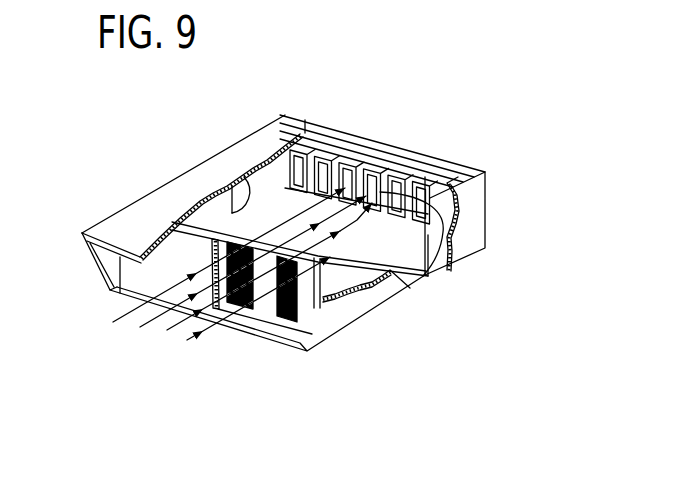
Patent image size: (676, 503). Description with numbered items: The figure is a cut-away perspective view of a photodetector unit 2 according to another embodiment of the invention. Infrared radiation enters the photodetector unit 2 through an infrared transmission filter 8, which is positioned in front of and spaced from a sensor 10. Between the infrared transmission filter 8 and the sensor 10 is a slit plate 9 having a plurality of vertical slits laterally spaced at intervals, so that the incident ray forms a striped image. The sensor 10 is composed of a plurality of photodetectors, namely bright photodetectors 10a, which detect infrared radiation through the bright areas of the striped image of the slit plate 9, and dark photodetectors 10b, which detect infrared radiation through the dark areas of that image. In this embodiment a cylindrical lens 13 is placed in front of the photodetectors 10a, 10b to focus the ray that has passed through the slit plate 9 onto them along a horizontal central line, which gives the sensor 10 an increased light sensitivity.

The photodetector unit 2 is at (495, 247).
The infrared transmission filter 8 is at (135, 268).
The slit plate 9 is at (318, 290).
The sensor 10 is at (410, 138).
The bright photodetectors 10a is at (346, 165).
The dark photodetectors 10b is at (365, 190).
The cylindrical lens 13 is at (438, 252).